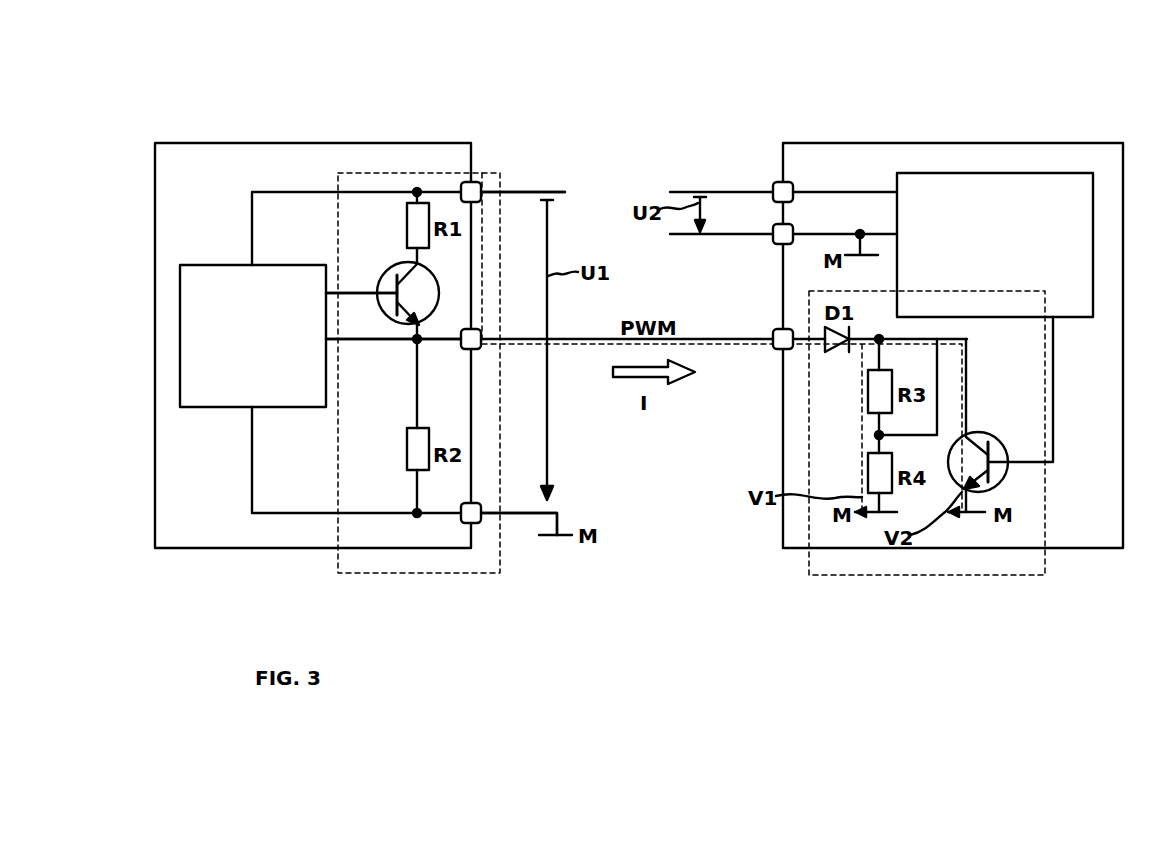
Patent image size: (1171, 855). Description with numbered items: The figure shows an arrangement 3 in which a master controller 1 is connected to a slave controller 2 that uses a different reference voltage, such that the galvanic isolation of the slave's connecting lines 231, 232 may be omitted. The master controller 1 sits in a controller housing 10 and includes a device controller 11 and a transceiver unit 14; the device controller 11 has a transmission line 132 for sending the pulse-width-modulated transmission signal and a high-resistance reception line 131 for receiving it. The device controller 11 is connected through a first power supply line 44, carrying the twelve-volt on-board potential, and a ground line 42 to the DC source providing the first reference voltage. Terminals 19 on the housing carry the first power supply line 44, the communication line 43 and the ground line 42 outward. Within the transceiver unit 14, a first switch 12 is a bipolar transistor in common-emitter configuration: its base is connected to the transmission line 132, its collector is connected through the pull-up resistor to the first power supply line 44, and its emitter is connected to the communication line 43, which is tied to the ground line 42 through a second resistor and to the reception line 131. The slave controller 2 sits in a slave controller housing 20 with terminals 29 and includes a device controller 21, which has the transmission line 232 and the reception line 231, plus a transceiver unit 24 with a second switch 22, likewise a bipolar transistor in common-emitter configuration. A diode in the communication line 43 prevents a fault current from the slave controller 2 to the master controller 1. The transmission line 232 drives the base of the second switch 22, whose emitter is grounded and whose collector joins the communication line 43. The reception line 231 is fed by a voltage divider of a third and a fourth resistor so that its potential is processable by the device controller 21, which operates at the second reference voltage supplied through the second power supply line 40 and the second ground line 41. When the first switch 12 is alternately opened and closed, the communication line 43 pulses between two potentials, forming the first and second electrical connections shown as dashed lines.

The arrangement 3 is at (398, 96).
The controller housing 10 is at (235, 143).
The slave controller housing 20 is at (1055, 143).
The master controller 1 is at (204, 211).
The device controller 11 is at (253, 336).
The device controller 21 is at (995, 245).
The slave controller 2 is at (1079, 506).
The first switch 12 is at (394, 270).
The second switch 22 is at (990, 446).
The transceiver unit 14 is at (447, 574).
The transceiver unit 24 is at (881, 575).
The terminal 19 is at (461, 345).
The terminal 29 is at (795, 190).
The second power supply line 40 is at (738, 191).
The second ground line 41 is at (738, 236).
The ground line 42 is at (525, 512).
The communication line 43 is at (523, 337).
The first power supply line 44 is at (517, 191).
The reception line 131 is at (382, 341).
The transmission line 132 is at (355, 293).
The reception line 231 is at (937, 364).
The transmission line 232 is at (1053, 353).